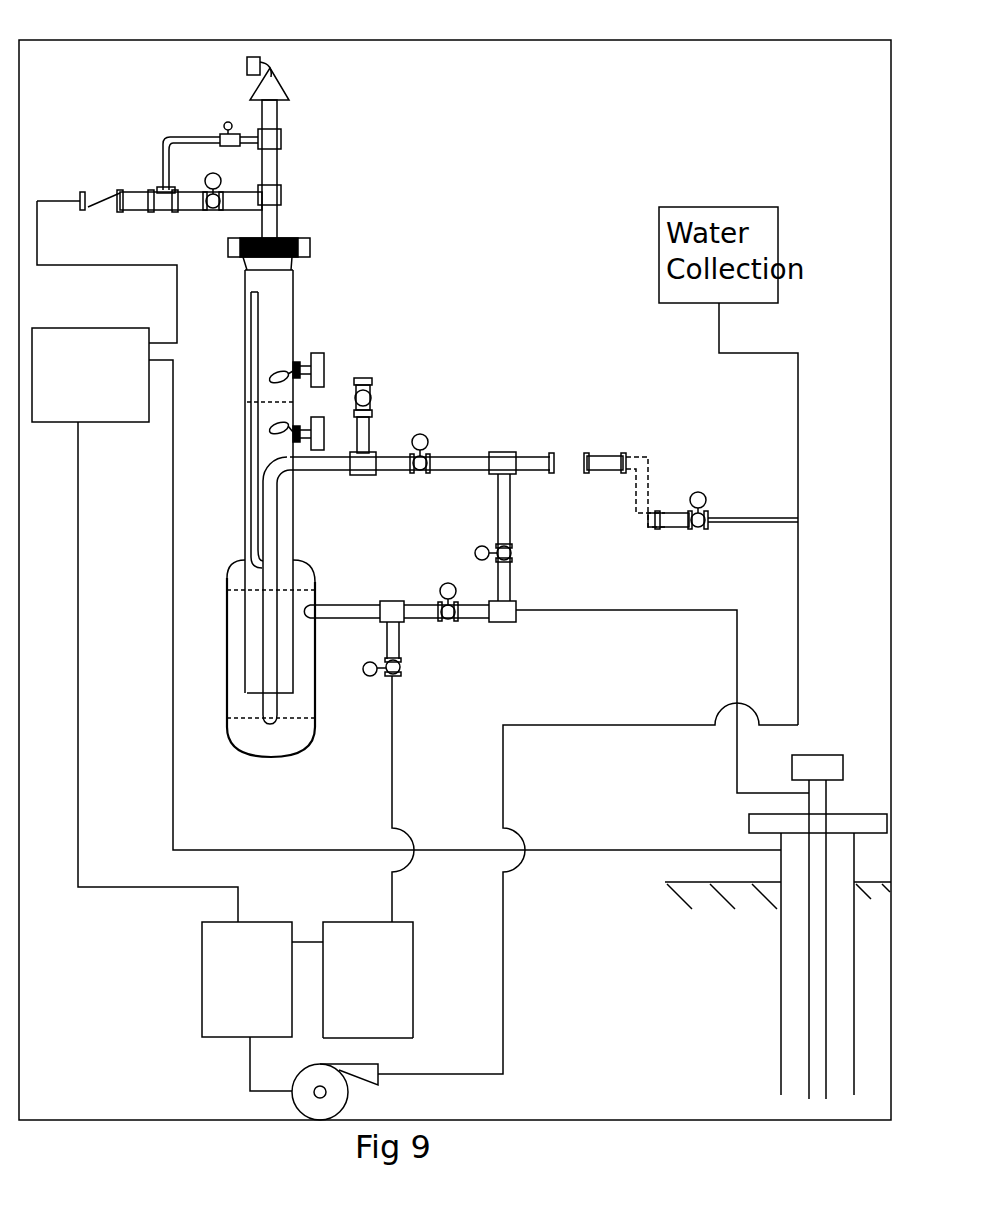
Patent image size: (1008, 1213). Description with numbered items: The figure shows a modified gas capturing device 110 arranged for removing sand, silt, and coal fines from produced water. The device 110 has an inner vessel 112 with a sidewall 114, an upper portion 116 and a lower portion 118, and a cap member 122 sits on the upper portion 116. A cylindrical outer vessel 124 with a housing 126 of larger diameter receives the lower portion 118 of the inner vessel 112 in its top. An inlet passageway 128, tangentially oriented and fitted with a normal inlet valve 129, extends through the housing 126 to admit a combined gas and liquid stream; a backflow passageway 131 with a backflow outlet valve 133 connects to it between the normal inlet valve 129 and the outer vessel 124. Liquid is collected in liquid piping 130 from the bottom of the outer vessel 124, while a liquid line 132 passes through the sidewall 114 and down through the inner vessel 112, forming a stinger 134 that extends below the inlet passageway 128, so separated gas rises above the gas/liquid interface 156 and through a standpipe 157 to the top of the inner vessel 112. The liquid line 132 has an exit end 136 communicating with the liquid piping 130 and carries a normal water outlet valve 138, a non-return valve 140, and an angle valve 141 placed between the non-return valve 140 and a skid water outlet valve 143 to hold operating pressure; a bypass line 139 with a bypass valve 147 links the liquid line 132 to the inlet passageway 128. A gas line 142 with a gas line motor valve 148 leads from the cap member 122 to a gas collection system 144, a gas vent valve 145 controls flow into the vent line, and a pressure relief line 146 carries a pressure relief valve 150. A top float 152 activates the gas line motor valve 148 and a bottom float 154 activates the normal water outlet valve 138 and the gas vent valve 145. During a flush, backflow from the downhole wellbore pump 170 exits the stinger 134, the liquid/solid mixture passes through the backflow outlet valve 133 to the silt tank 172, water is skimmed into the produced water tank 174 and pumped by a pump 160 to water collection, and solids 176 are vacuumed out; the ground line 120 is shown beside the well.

The gas capturing device 110 is at (461, 282).
The inner vessel 112 is at (242, 527).
The sidewall 114 is at (242, 470).
The upper portion 116 is at (298, 494).
The lower portion 118 is at (301, 589).
The ground surface 120 is at (707, 878).
The cap member 122 is at (314, 237).
The outer vessel 124 is at (271, 757).
The housing 126 is at (245, 752).
The inlet passageway 128 is at (308, 605).
The normal inlet valve 129 is at (458, 622).
The liquid piping 130 is at (800, 460).
The backflow passageway 131 is at (404, 643).
The liquid line 132 is at (603, 455).
The backflow outlet valve 133 is at (403, 675).
The stinger 134 is at (261, 732).
The exit end 136 is at (761, 523).
The normal water outlet valve 138 is at (434, 427).
The bypass line 139 is at (514, 580).
The non-return valve 140 is at (577, 455).
The angle valve 141 is at (661, 463).
The gas line 142 is at (190, 132).
The gas vent line 143 is at (130, 188).
The gas collection system 144 is at (109, 326).
The gas vent valve 145 is at (242, 194).
The pressure relief line 146 is at (285, 113).
The bypass valve 147 is at (513, 543).
The gas line motor valve 148 is at (253, 135).
The pressure relief valve 150 is at (292, 83).
The top float 152 is at (317, 349).
The bottom float 154 is at (323, 411).
The gas/liquid interface 156 is at (283, 396).
The standpipe 157 is at (249, 305).
The pump 160 is at (386, 1083).
The downhole wellbore pump 170 is at (778, 999).
The silt tank 172 is at (416, 945).
The produced water tank 174 is at (201, 958).
The solids 176 is at (388, 1025).